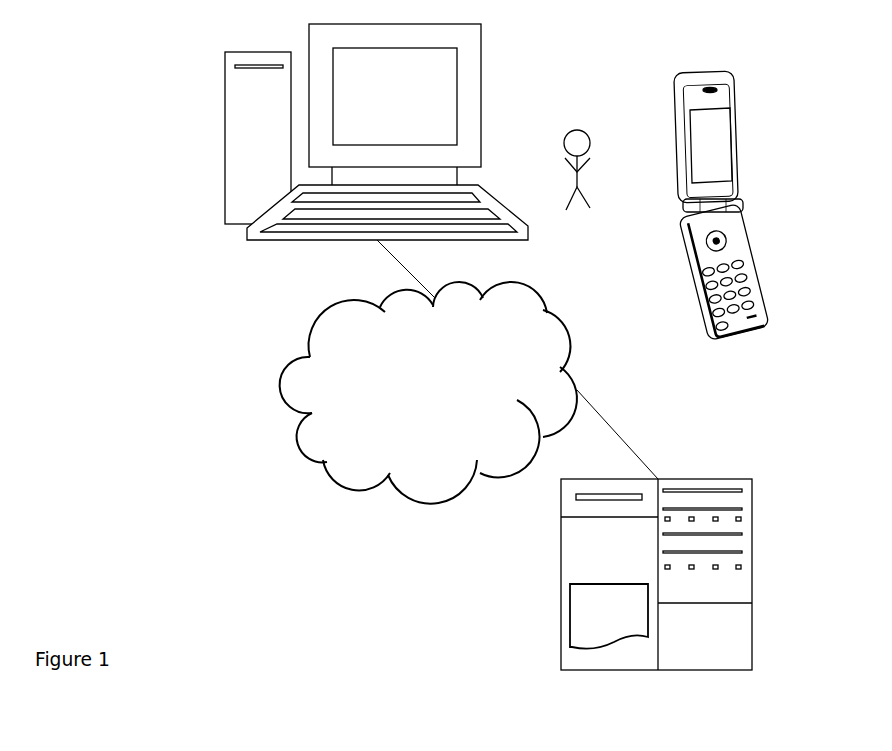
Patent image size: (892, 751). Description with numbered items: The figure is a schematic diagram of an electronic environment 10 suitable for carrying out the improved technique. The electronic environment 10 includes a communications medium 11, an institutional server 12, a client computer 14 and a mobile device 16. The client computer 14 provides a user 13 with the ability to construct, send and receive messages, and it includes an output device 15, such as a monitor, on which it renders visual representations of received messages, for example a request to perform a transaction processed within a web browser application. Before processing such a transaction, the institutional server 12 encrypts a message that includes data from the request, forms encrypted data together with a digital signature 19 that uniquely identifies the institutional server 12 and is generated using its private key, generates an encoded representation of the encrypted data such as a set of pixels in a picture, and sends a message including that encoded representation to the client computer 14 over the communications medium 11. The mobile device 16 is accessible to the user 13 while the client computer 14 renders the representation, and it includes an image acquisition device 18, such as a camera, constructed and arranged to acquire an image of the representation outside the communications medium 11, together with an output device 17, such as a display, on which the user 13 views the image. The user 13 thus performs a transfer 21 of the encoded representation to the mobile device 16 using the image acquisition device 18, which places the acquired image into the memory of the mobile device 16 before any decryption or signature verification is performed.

The electronic environment 10 is at (114, 129).
The communications medium 11 is at (469, 372).
The institutional server 12 is at (558, 575).
The user 13 is at (575, 233).
The client computer 14 is at (226, 135).
The output device 15 is at (427, 113).
The mobile device 16 is at (753, 202).
The output device 17 is at (715, 145).
The image acquisition device 18 is at (710, 88).
The digital signature 19 is at (605, 583).
The transfer 21 is at (442, 121).